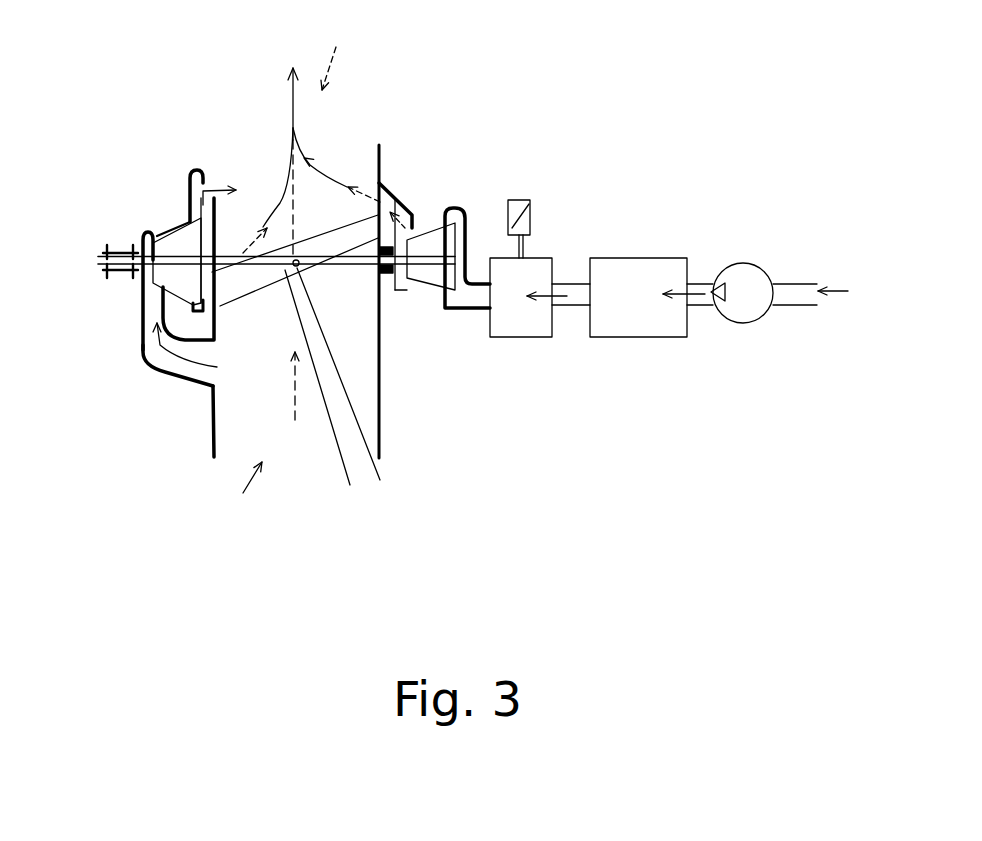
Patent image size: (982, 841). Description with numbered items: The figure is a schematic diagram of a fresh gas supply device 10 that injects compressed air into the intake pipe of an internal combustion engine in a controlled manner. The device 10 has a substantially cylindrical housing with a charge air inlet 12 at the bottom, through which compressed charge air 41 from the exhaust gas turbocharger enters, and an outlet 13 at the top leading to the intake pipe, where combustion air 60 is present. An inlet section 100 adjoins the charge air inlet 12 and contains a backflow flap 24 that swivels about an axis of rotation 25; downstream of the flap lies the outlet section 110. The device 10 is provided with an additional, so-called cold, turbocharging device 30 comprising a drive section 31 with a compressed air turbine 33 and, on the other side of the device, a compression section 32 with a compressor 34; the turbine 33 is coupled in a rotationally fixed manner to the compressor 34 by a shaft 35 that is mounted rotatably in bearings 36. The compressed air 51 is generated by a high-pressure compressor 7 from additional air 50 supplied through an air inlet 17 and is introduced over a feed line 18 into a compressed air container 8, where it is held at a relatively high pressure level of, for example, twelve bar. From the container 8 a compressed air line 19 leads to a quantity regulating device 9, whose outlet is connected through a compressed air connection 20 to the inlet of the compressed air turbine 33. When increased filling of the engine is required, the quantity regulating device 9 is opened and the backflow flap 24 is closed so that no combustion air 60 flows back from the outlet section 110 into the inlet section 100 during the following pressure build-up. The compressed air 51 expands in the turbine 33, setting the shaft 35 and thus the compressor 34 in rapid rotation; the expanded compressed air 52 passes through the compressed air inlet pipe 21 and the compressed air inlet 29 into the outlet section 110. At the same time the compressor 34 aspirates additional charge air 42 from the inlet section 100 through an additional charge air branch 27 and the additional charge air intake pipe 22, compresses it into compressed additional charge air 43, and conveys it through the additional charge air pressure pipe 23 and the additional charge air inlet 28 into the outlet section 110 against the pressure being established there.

The high-pressure compressor 7 is at (728, 262).
The compressed air container 8 is at (617, 258).
The quantity regulating device 9 is at (532, 212).
The fresh gas supply device 10 is at (213, 430).
The charge air inlet 12 is at (232, 494).
The outlet 13 is at (330, 53).
The air inlet 17 is at (800, 306).
The connecting line 18 is at (700, 306).
The compressed air line 19 is at (568, 310).
The compressed air connection 20 is at (468, 300).
The compressed air inlet pipe 21 is at (388, 190).
The additional charge air intake pipe 22 is at (158, 365).
The additional charge air pressure pipe 23 is at (190, 176).
The backflow flap 24 is at (328, 393).
The axis of rotation 25 is at (352, 384).
The additional charge air branch 27 is at (216, 366).
The additional charge air inlet 28 is at (207, 171).
The compressed air inlet 29 is at (385, 163).
The additional turbocharging device 30 is at (134, 137).
The drive section 31 is at (457, 193).
The compression section 32 is at (141, 216).
The compressed air turbine 33 is at (432, 272).
The compressor 34 is at (172, 273).
The shaft 35 is at (382, 363).
The bearings 36 is at (112, 283).
The compressed charge air 41 is at (281, 430).
The additional charge air 42 is at (190, 357).
The compressed additional charge air 43 is at (205, 168).
The additional air 50 is at (830, 275).
The compressed air 51 is at (535, 296).
The expanded compressed air 52 is at (323, 170).
The combustion air 60 is at (276, 150).
The inlet section 100 is at (233, 439).
The outlet section 110 is at (308, 221).